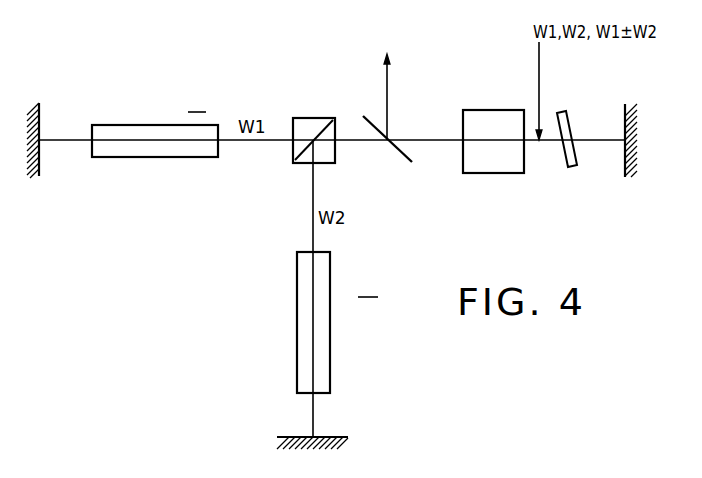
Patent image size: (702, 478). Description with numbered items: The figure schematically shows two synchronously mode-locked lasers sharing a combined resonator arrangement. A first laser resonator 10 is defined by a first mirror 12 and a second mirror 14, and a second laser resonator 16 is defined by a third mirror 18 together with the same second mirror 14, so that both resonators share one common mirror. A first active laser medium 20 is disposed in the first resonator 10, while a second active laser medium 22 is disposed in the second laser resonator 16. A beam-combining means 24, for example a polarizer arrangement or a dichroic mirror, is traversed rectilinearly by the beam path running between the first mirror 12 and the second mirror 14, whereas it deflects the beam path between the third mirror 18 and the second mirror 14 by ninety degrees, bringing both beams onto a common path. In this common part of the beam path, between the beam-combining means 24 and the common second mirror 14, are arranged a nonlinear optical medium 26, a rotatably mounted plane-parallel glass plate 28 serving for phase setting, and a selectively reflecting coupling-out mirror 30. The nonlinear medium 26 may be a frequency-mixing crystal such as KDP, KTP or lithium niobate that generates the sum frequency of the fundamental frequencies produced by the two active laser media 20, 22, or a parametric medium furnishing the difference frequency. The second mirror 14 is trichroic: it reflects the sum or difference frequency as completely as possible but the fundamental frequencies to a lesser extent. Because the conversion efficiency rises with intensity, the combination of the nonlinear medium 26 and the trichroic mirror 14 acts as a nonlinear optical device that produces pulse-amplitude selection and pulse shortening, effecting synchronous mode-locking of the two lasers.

The first laser resonator 10 is at (199, 101).
The first mirror 12 is at (40, 162).
The second mirror 14 is at (625, 122).
The second laser resonator 16 is at (370, 286).
The third mirror 18 is at (330, 437).
The first active laser medium 20 is at (153, 150).
The second active laser medium 22 is at (330, 347).
The beam-combining means 24 is at (323, 158).
The nonlinear optical medium 26 is at (488, 172).
The plane-parallel glass plate 28 is at (572, 167).
The coupling-out mirror 30 is at (408, 162).